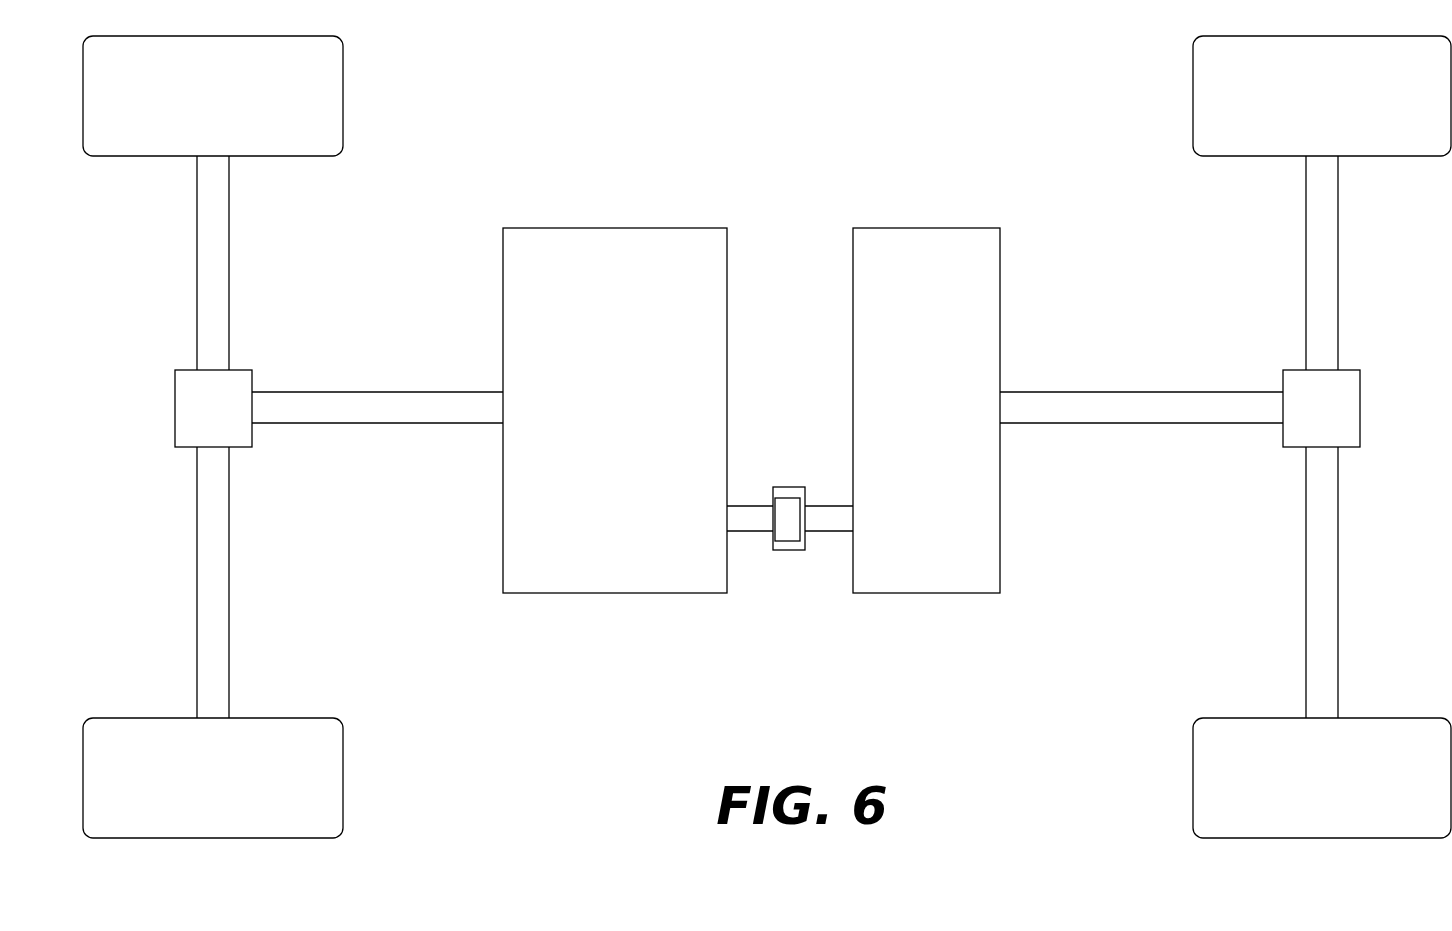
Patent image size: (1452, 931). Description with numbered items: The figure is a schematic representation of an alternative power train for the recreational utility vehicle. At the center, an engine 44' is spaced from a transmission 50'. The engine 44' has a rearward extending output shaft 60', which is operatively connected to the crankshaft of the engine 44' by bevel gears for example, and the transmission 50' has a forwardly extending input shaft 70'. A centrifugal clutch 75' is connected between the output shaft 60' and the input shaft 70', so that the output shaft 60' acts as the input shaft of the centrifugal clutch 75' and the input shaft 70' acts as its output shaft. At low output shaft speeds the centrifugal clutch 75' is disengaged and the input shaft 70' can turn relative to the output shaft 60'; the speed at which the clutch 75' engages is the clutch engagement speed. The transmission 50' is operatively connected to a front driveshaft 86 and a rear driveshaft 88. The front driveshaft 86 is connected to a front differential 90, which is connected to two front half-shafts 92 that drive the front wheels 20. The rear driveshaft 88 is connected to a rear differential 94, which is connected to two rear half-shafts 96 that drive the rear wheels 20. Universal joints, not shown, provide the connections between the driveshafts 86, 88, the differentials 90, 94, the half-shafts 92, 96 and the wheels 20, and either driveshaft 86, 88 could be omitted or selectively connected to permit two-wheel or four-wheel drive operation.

The wheels 20 is at (200, 107).
The front half-shafts 92 is at (197, 270).
The rear half-shafts 96 is at (1338, 245).
The front differential 90 is at (175, 430).
The rear differential 94 is at (1360, 400).
The front driveshaft 86 is at (442, 392).
The rear driveshaft 88 is at (1162, 425).
The engine 44' is at (615, 410).
The transmission 50' is at (926, 410).
The output shaft 60' is at (750, 579).
The input shaft 70' is at (833, 573).
The centrifugal clutch 75' is at (784, 590).